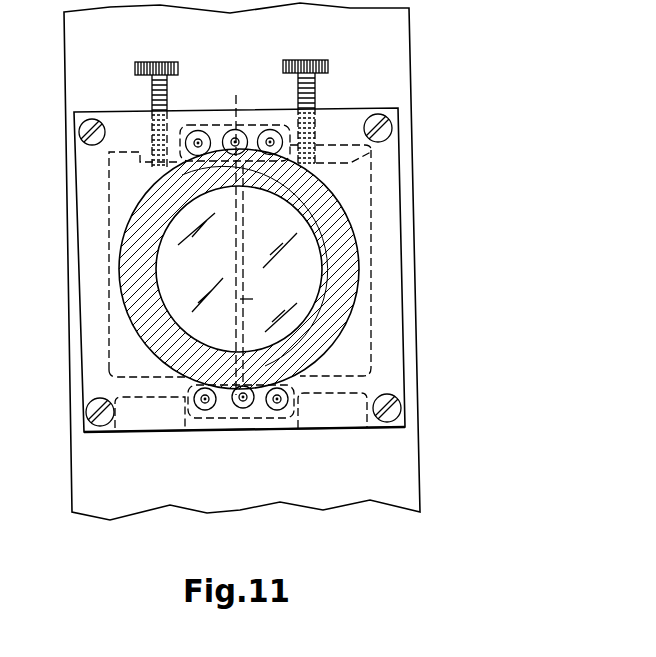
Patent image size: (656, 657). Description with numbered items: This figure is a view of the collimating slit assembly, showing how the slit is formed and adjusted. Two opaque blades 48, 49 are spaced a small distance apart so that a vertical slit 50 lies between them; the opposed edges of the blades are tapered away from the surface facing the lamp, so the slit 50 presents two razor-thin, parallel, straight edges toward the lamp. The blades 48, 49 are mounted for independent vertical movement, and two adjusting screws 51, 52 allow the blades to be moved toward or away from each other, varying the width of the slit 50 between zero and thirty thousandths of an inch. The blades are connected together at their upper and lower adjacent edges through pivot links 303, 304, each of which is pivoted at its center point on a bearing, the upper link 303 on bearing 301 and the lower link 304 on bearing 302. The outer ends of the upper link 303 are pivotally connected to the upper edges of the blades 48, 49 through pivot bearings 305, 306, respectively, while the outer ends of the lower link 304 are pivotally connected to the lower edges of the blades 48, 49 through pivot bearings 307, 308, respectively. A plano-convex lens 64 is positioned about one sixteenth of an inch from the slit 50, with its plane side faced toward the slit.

The opaque blade 48 is at (113, 162).
The opaque blade 49 is at (373, 153).
The vertical slit 50 is at (253, 300).
The adjusting screw 51 is at (140, 65).
The adjusting screw 52 is at (326, 62).
The plano-convex lens 64 is at (300, 238).
The bearing 301 is at (236, 140).
The bearing 302 is at (246, 403).
The pivot link 303 is at (221, 131).
The pivot link 304 is at (238, 405).
The pivot bearing 305 is at (197, 132).
The pivot bearing 306 is at (269, 131).
The pivot bearing 307 is at (205, 408).
The pivot bearing 308 is at (280, 408).